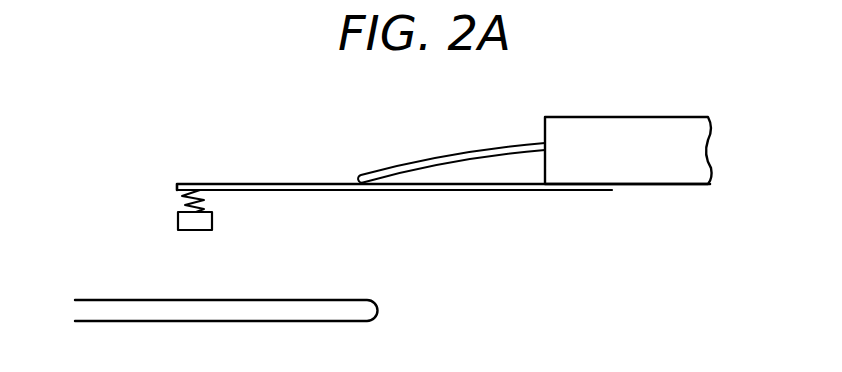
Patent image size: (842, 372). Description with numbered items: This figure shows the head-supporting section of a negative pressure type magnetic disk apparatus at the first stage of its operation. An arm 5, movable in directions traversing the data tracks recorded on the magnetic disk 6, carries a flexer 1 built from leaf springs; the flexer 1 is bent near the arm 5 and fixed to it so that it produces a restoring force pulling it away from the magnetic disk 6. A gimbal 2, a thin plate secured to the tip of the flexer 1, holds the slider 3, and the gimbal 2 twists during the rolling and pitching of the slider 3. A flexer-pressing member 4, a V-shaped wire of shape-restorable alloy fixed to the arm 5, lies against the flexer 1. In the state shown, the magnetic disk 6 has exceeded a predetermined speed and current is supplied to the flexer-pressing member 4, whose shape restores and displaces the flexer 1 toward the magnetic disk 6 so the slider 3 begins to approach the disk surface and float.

The flexer 1 is at (468, 192).
The gimbal 2 is at (190, 201).
The slider 3 is at (212, 220).
The flexer-pressing member 4 is at (398, 164).
The arm 5 is at (545, 118).
The magnetic disk 6 is at (362, 305).